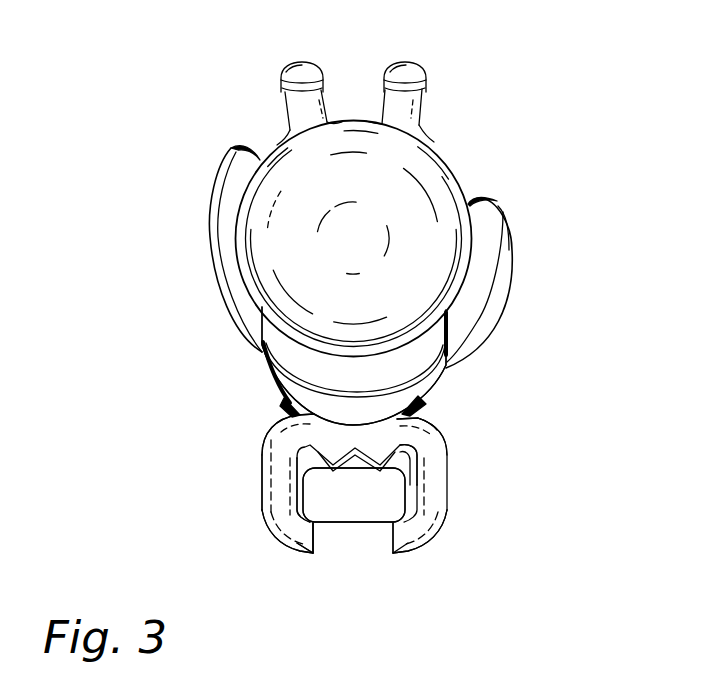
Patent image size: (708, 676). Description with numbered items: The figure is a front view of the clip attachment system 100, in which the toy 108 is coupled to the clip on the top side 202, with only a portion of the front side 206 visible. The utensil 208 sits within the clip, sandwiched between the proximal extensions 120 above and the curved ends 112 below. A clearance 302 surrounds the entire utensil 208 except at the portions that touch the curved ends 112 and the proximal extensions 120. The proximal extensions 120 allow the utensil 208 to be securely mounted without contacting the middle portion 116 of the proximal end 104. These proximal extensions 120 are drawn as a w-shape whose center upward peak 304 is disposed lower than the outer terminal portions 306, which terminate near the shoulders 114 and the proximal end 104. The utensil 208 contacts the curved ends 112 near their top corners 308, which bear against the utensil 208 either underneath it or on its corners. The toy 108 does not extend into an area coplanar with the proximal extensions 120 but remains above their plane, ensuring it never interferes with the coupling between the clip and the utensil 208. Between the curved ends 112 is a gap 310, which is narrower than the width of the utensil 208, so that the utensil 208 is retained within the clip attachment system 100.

The clip attachment system 100 is at (153, 71).
The proximal end 104 is at (455, 441).
The toy 108 is at (550, 220).
The curved ends 112 is at (292, 550).
The shoulders 114 is at (275, 423).
The middle portion 116 is at (352, 426).
The proximal extensions 120 is at (437, 398).
The top side 202 is at (430, 402).
The front side 206 is at (267, 438).
The utensil 208 is at (403, 484).
The clearance 302 is at (297, 495).
The center upward peak 304 is at (418, 423).
The outer terminal portions 306 is at (400, 470).
The top corners 308 is at (320, 545).
The gap 310 is at (356, 546).